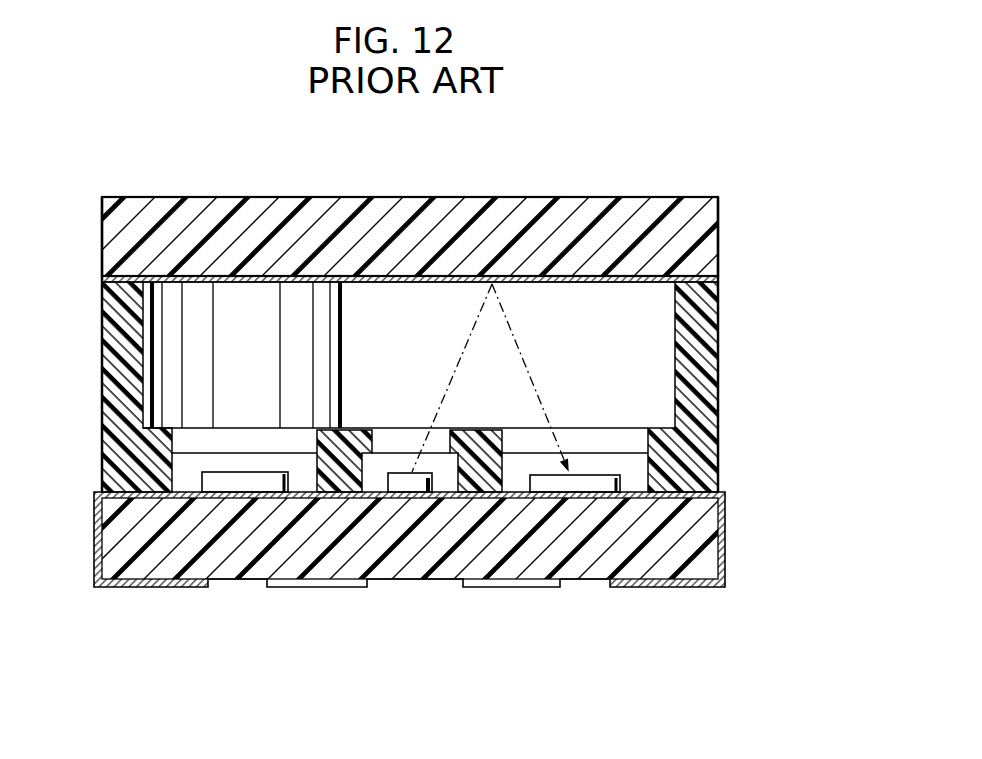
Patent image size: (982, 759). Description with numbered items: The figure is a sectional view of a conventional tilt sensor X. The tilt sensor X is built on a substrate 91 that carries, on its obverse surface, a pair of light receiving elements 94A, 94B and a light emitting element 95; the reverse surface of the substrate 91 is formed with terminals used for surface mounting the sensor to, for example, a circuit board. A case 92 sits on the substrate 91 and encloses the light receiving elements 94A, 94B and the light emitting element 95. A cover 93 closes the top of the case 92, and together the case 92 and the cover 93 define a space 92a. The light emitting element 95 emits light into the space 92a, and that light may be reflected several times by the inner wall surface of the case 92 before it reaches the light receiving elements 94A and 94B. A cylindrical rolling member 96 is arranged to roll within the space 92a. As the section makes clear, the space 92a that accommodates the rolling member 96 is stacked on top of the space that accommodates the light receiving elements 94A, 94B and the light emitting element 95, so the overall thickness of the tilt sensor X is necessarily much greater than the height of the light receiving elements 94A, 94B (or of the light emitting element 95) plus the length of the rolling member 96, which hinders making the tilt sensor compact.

The tilt sensor X is at (110, 181).
The substrate 91 is at (702, 532).
The case 92 is at (708, 383).
The space 92a is at (552, 308).
The cover 93 is at (707, 252).
The light receiving element 94A is at (255, 480).
The light receiving element 94B is at (567, 485).
The light emitting element 95 is at (400, 482).
The rolling member 96 is at (257, 300).